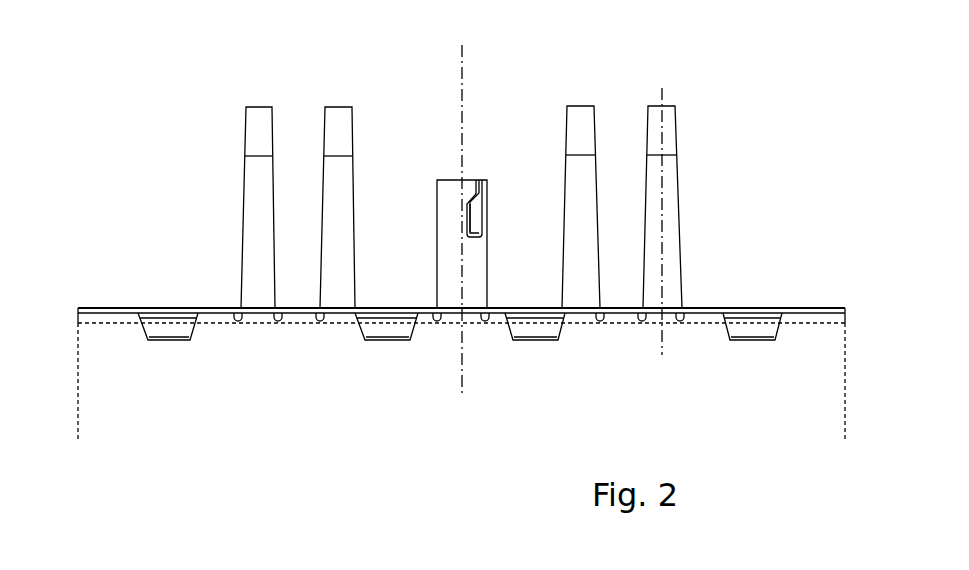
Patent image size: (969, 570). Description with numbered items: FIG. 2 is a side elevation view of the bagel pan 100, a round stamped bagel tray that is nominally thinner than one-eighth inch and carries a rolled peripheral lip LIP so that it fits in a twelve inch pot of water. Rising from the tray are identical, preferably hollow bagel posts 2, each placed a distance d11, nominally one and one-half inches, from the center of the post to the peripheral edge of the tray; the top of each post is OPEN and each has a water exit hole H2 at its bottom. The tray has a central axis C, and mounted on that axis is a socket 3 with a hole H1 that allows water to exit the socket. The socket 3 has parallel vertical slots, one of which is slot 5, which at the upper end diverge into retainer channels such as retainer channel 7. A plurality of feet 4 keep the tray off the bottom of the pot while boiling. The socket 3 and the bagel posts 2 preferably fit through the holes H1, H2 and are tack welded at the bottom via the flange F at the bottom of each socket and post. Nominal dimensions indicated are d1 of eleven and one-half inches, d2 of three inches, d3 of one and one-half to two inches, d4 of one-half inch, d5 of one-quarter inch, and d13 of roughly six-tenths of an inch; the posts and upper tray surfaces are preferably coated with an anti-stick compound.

The resistor assembly / component 100 is at (150, 88).
The bagel post 2 is at (246, 134).
The socket 3 is at (437, 238).
The feet 4 is at (186, 340).
The vertical slot 5 is at (472, 217).
The retainer channel 7 is at (485, 182).
The flange F is at (238, 323).
The hole H1 is at (479, 332).
The water exit hole H2 is at (343, 330).
The rolled peripheral lip LIP is at (84, 322).
The open top OPEN is at (341, 94).
The central axis C is at (558, 209).
The dimension d1 is at (845, 437).
The dimension d2 is at (717, 106).
The dimension d3 is at (525, 180).
The dimension d4 is at (642, 323).
The dimension d5 is at (675, 100).
The dimension d11 is at (845, 308).
The dimension d13 is at (485, 388).